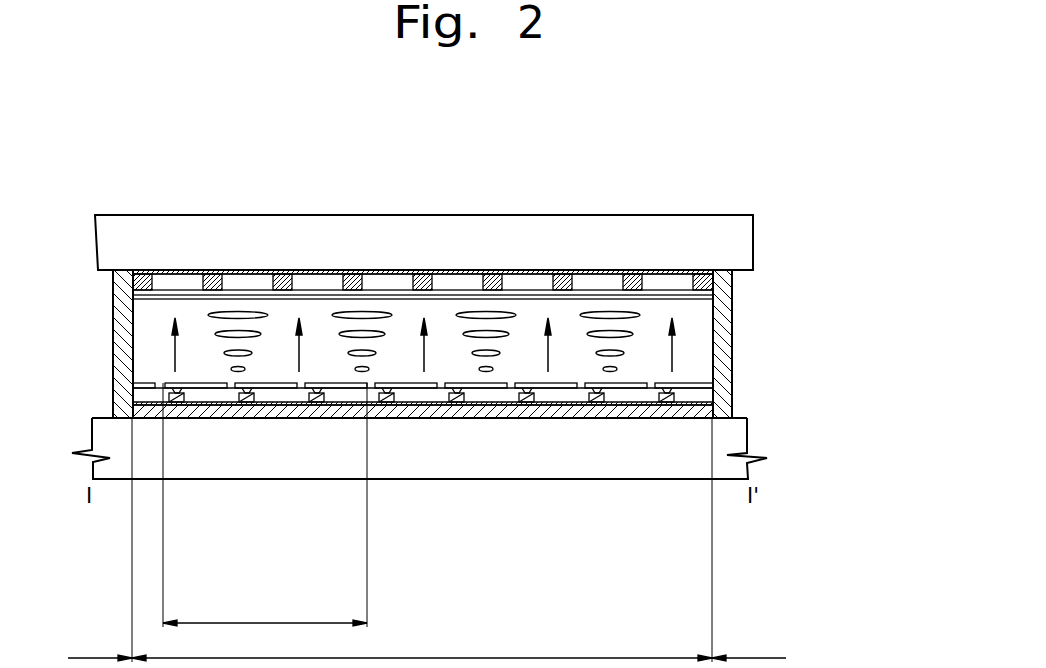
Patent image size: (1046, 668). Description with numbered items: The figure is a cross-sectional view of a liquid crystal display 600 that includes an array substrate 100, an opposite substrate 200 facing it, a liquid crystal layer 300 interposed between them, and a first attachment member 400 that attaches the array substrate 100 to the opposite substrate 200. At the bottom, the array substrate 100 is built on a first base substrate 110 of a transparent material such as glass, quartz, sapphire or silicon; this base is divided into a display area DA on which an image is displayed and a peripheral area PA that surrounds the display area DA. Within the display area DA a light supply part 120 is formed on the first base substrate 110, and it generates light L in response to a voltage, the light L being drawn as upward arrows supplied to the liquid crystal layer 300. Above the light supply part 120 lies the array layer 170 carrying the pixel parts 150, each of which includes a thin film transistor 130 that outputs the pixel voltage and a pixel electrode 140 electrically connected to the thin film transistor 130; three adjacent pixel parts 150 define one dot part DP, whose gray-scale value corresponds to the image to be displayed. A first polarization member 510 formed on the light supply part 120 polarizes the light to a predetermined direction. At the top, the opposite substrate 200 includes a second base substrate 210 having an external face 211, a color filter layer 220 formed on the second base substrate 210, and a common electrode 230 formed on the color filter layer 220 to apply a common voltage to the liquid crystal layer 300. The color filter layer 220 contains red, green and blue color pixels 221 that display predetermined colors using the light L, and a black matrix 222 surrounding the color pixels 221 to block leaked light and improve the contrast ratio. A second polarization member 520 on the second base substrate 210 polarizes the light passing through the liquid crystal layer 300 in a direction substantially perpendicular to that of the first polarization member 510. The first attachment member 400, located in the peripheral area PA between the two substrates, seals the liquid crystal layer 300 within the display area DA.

The liquid crystal display 600 is at (686, 125).
The array substrate 100 is at (846, 365).
The first base substrate 110 is at (745, 440).
The light supply part 120 is at (735, 412).
The thin film transistor 130 is at (246, 404).
The pixel electrode 140 is at (289, 389).
The pixel parts 150 is at (318, 545).
The array layer 170 is at (485, 474).
The opposite substrate 200 is at (846, 232).
The second base substrate 210 is at (745, 240).
The external face 211 is at (587, 215).
The color filter layer 220 is at (485, 207).
The RGB color pixels 221 is at (245, 280).
The black matrix 222 is at (211, 271).
The common electrode 230 is at (675, 296).
The liquid crystal layer 300 is at (145, 316).
The first attachment member 400 is at (118, 342).
The first polarization member 510 is at (427, 412).
The second polarization member 520 is at (418, 270).
The light L is at (672, 350).
The peripheral area PA is at (427, 540).
The display area DA is at (422, 646).
The dot part DP is at (265, 505).